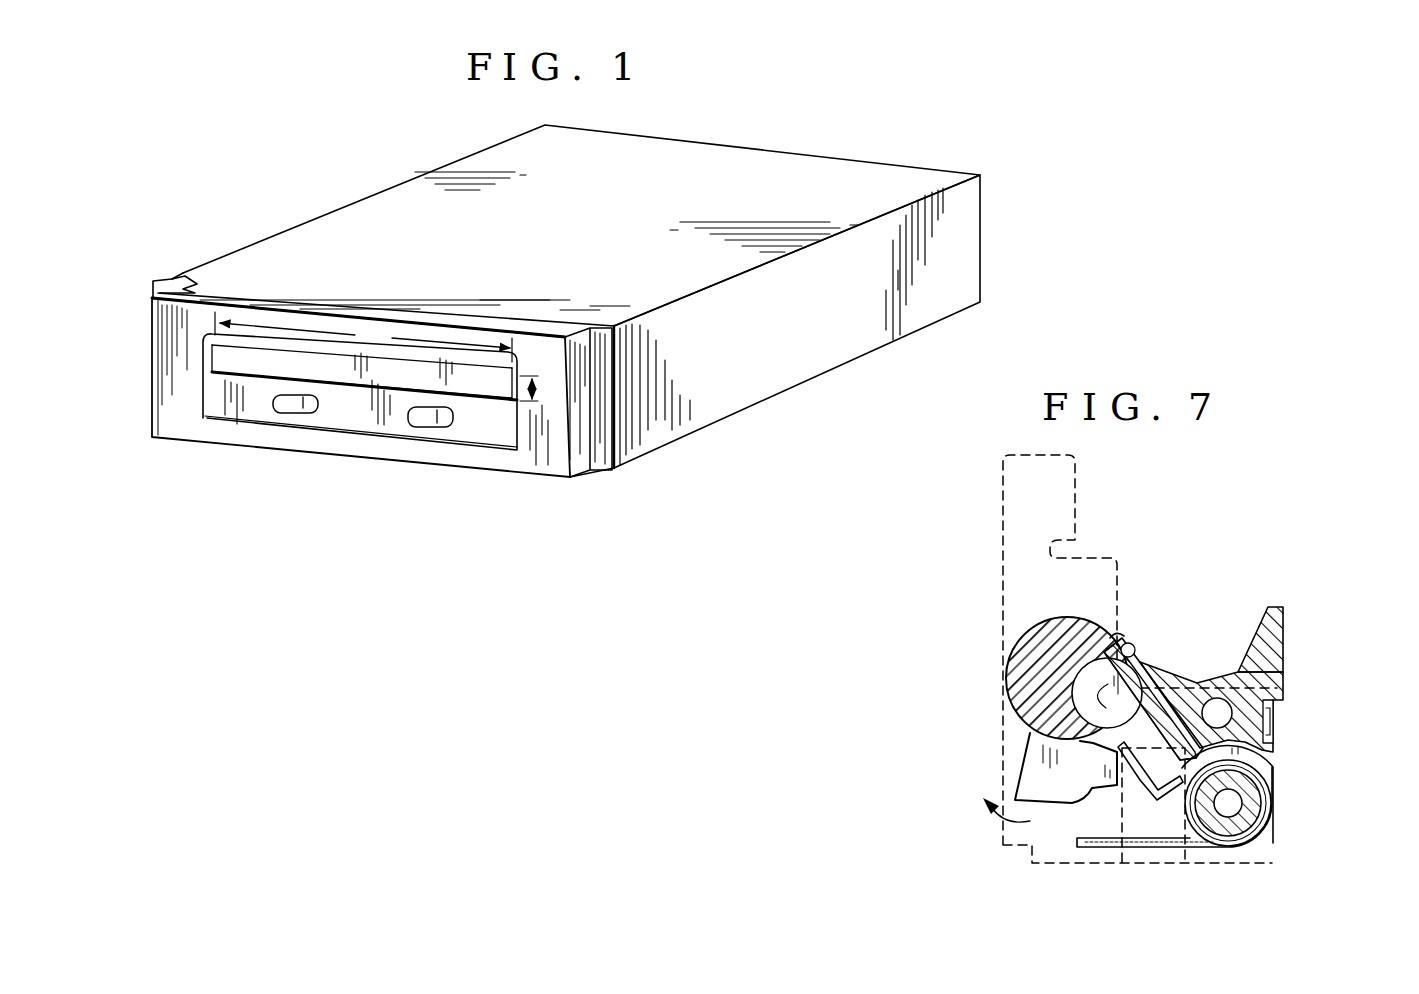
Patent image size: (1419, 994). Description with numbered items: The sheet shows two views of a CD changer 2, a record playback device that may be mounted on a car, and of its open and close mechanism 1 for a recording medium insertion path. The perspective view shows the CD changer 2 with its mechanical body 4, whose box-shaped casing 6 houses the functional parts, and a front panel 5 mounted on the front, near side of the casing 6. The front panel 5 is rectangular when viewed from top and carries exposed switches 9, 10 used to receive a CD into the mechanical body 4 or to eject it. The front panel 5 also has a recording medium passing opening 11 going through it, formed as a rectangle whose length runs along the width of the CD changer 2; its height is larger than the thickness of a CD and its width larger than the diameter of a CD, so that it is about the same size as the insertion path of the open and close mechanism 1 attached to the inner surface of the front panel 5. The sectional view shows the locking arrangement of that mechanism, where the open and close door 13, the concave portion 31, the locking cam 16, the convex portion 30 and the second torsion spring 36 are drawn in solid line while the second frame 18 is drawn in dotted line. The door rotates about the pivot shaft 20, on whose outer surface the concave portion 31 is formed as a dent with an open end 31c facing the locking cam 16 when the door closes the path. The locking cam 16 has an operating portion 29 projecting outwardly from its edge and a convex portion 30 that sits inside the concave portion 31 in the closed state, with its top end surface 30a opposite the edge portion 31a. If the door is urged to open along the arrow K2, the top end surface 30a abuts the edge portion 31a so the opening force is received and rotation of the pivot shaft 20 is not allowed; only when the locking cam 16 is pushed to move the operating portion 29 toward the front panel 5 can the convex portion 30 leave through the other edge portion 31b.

In FIG. 1, the open and close mechanism 1 is at (483, 396).
In FIG. 7, the open and close mechanism 1 is at (1205, 548).
In FIG. 1, the CD changer 2 is at (777, 149).
In FIG. 1, the mechanical body 4 is at (873, 158).
In FIG. 1, the front panel 5 is at (530, 452).
In FIG. 1, the casing 6 is at (952, 244).
In FIG. 1, the switch 9 is at (290, 406).
In FIG. 1, the switch 10 is at (435, 421).
In FIG. 1, the recording medium passing opening 11 is at (402, 382).
In FIG. 7, the open and close door 13 is at (1017, 770).
In FIG. 7, the locking cam 16 is at (1290, 661).
In FIG. 7, the second frame 18 is at (1000, 572).
In FIG. 7, the pivot shaft 20 is at (1043, 641).
In FIG. 7, the operating portion 29 is at (1287, 639).
In FIG. 7, the convex portion 30 is at (1147, 666).
In FIG. 7, the top end surface 30a is at (1108, 630).
In FIG. 7, the concave portion 31 is at (1092, 702).
In FIG. 7, the edge portion 31a is at (1140, 662).
In FIG. 7, the edge portion 31b is at (1100, 743).
In FIG. 7, the open end 31c is at (1110, 760).
In FIG. 7, the second torsion spring 36 is at (1273, 776).
In FIG. 7, the arrow K2 is at (997, 813).